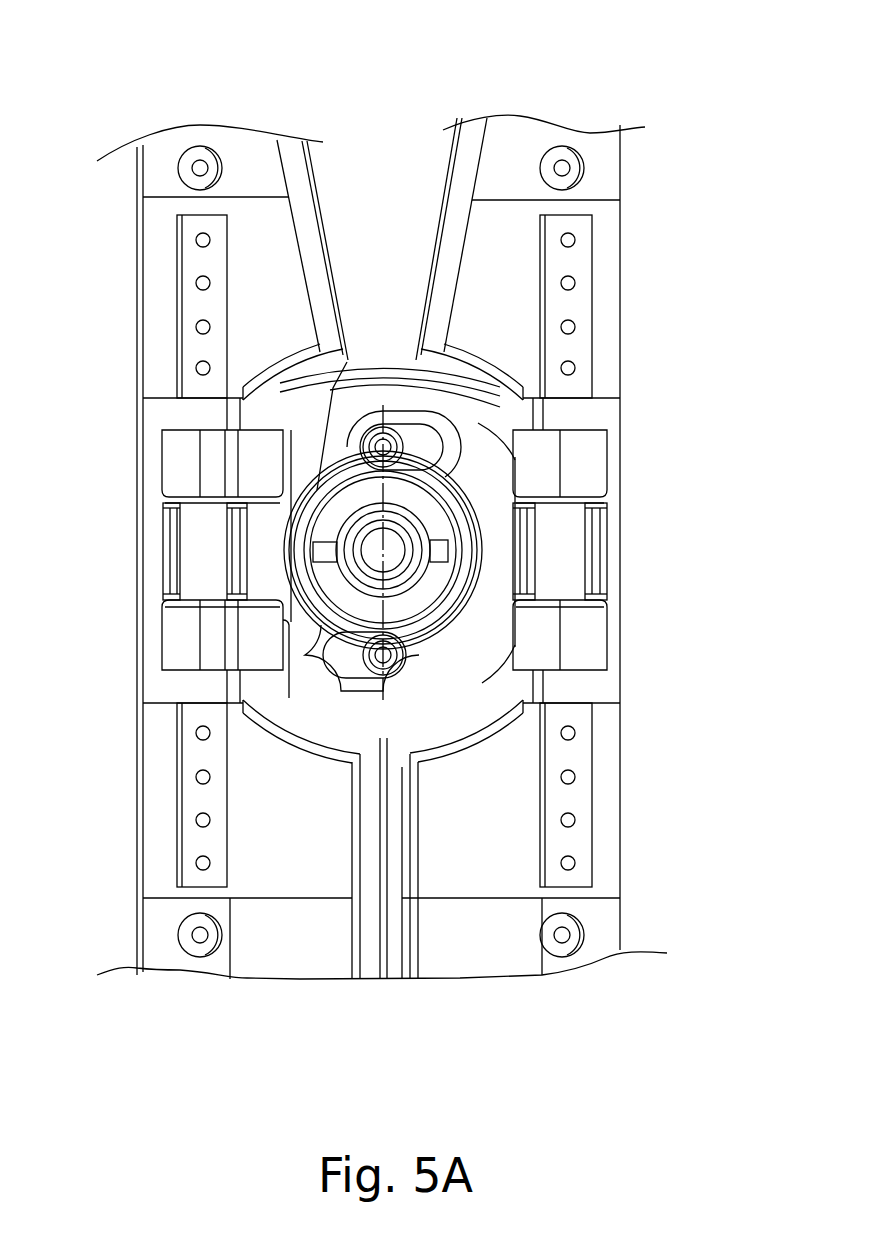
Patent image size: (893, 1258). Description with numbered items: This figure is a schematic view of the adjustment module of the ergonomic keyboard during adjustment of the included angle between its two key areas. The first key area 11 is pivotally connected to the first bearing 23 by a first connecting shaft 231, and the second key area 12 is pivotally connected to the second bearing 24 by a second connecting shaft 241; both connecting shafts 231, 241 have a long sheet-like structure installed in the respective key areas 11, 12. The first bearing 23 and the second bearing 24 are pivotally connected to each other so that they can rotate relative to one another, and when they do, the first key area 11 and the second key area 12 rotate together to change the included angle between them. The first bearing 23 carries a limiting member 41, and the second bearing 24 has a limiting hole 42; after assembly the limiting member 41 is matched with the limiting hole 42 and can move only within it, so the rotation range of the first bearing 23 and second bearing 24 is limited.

The first key area 11 is at (523, 140).
The second key area 12 is at (235, 143).
The first bearing 23 is at (588, 462).
The second bearing 24 is at (185, 460).
The first connecting shaft 231 is at (592, 335).
The second connecting shaft 241 is at (177, 330).
The limiting member 41 is at (382, 427).
The limiting hole 42 is at (422, 432).